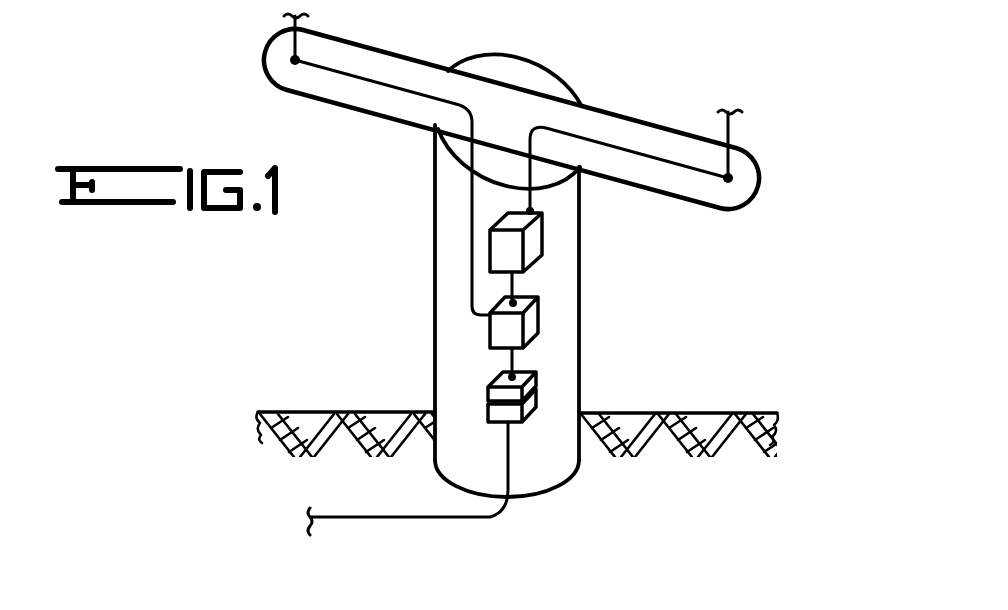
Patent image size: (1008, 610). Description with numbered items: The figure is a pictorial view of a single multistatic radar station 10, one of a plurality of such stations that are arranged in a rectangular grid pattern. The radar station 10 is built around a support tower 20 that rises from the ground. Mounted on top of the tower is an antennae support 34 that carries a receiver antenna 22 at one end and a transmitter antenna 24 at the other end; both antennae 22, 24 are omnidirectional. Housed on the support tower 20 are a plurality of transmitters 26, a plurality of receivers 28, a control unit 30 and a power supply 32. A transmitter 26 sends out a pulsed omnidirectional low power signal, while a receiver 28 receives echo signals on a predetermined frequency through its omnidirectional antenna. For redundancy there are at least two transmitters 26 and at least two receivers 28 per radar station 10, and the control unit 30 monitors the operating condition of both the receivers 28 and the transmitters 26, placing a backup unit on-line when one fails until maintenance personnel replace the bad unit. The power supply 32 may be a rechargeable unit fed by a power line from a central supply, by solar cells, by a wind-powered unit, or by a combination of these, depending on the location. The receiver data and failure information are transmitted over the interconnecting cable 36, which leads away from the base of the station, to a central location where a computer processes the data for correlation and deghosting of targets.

The radar station 10 is at (549, 274).
The support tower 20 is at (434, 285).
The receiver antenna 22 is at (292, 44).
The transmitter antenna 24 is at (732, 132).
The transmitters 26 is at (542, 240).
The receivers 28 is at (538, 312).
The control unit 30 is at (537, 378).
The power supply 32 is at (537, 400).
The antennae support 34 is at (408, 59).
The interconnecting cable 36 is at (345, 502).